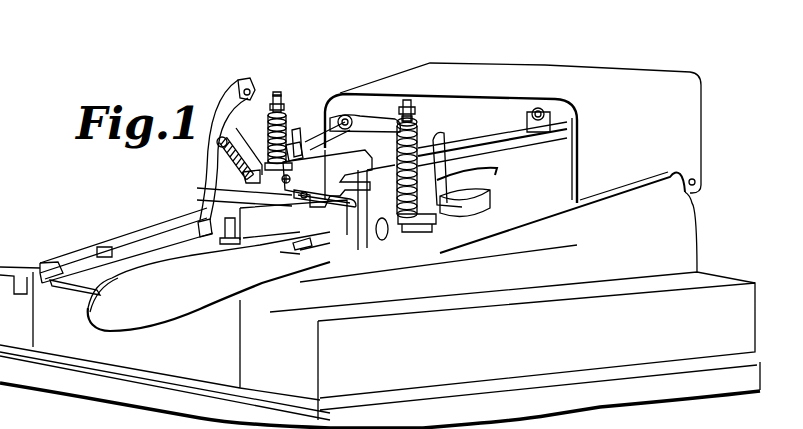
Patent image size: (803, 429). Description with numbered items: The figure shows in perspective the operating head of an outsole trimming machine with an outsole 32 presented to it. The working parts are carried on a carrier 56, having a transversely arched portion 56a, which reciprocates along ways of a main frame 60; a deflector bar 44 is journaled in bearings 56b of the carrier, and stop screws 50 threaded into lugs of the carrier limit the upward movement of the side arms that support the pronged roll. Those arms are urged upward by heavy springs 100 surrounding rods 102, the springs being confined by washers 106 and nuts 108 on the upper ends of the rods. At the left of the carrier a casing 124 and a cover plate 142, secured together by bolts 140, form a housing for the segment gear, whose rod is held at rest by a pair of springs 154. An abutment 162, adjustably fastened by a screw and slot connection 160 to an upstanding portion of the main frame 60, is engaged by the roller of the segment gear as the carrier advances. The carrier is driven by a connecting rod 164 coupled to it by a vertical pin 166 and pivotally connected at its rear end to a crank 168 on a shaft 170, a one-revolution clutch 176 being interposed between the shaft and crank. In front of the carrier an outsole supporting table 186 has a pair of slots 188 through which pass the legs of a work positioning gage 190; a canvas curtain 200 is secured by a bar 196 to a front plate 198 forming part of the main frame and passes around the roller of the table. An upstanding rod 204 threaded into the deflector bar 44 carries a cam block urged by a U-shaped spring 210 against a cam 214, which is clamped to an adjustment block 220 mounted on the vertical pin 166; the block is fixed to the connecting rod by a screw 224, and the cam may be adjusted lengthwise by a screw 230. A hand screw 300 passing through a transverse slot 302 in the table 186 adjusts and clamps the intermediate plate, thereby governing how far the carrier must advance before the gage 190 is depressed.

The outsole 32 is at (176, 307).
The deflector bar 44 is at (392, 238).
The stop screws 50 is at (440, 205).
The carrier 56 is at (328, 232).
The transversely arched portion 56a is at (373, 127).
The bearings 56b is at (412, 233).
The main frame 60 is at (698, 240).
The heavy springs 100 is at (415, 150).
The rods 102 is at (405, 108).
The washers 106 is at (416, 120).
The nuts 108 is at (276, 100).
The casing 124 is at (242, 107).
The bolts 140 is at (268, 88).
The cover plate 142 is at (238, 82).
The springs 154 is at (236, 133).
The screw and slot connection 160 is at (130, 243).
The abutment 162 is at (73, 262).
The connecting rod 164 is at (478, 128).
The vertical pin 166 is at (345, 115).
The crank 168 is at (543, 157).
The shaft 170 is at (543, 109).
The one-revolution clutch 176 is at (515, 197).
The outsole supporting table 186 is at (308, 243).
The slots 188 is at (302, 170).
The work positioning gage 190 is at (290, 252).
The bar 196 is at (68, 288).
The front plate 198 is at (210, 369).
The canvas curtain 200 is at (107, 275).
The upstanding rod 204 is at (283, 197).
The U-shaped spring 210 is at (334, 195).
The cam 214 is at (300, 245).
The adjustment block 220 is at (276, 160).
The screw 224 is at (294, 135).
The screw 230 is at (224, 158).
The hand screw 300 is at (224, 220).
The transverse slot 302 is at (203, 243).